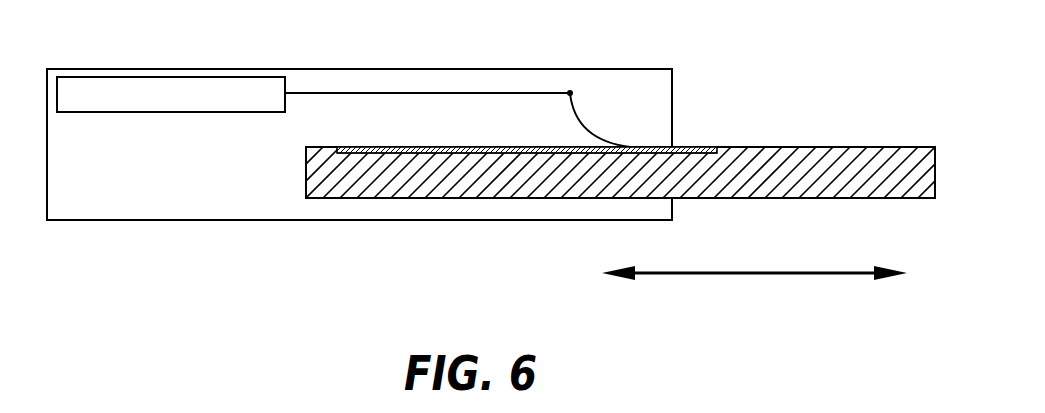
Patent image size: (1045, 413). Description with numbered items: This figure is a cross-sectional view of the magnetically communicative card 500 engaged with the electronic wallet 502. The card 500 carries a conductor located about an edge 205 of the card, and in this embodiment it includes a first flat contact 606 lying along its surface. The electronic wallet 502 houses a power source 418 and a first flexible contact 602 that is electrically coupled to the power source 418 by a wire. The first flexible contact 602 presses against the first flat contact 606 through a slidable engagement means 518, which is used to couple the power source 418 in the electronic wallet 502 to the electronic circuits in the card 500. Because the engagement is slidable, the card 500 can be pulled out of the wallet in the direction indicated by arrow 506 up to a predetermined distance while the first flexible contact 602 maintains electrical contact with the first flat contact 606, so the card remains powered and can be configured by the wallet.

The power source 418 is at (180, 76).
The edge 205 is at (305, 178).
The magnetically communicative card 500 is at (807, 147).
The electronic wallet 502 is at (210, 220).
The slidable engagement means 518 is at (642, 99).
The first flexible contact 602 is at (580, 115).
The first flat contact 606 is at (418, 153).
The arrow 506 is at (777, 274).